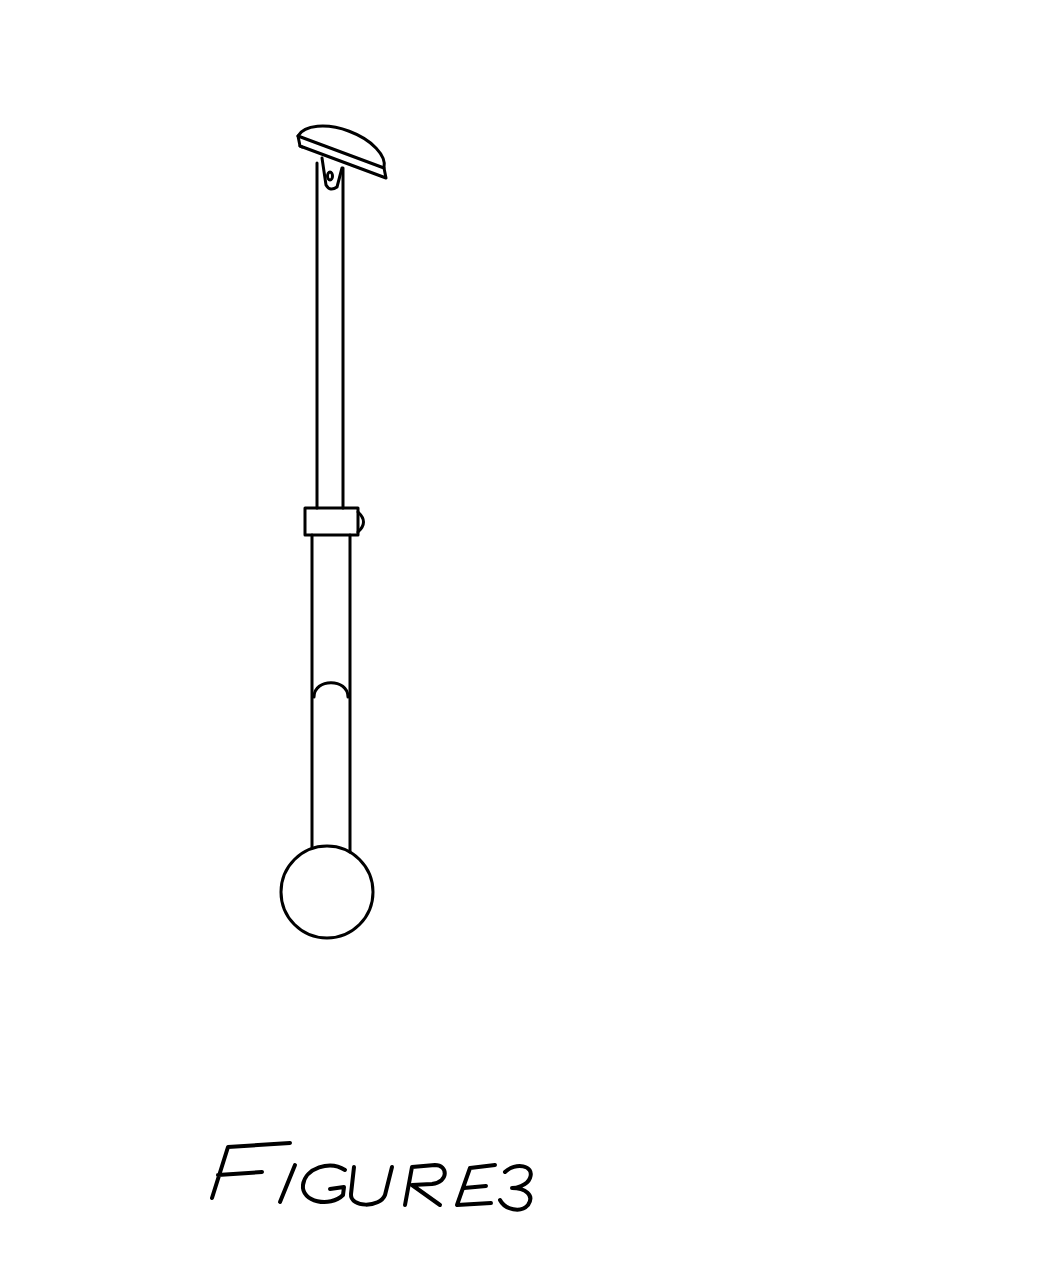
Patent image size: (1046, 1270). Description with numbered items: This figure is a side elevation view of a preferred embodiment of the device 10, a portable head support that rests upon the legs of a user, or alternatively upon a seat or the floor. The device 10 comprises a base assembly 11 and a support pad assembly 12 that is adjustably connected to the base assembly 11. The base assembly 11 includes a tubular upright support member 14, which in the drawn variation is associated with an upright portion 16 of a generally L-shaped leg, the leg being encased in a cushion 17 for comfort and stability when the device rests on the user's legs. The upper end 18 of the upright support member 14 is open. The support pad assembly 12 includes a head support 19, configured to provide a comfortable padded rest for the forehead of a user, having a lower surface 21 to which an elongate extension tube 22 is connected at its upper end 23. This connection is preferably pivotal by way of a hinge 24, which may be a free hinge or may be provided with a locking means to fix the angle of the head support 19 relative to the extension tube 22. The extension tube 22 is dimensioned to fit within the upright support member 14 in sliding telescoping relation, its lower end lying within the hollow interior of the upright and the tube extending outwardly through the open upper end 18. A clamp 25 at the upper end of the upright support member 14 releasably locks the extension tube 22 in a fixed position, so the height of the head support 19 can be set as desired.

The device 10 is at (787, 370).
The base assembly 11 is at (640, 770).
The support pad assembly 12 is at (607, 200).
The upright support member 14 is at (323, 620).
The upright portion 16 is at (333, 728).
The cushion 17 is at (593, 962).
The upper end 18 is at (326, 535).
The head support 19 is at (388, 170).
The lower surface 21 is at (300, 148).
The extension tube 22 is at (355, 135).
The upper end 23 is at (313, 162).
The hinge 24 is at (353, 180).
The clamp 25 is at (340, 523).